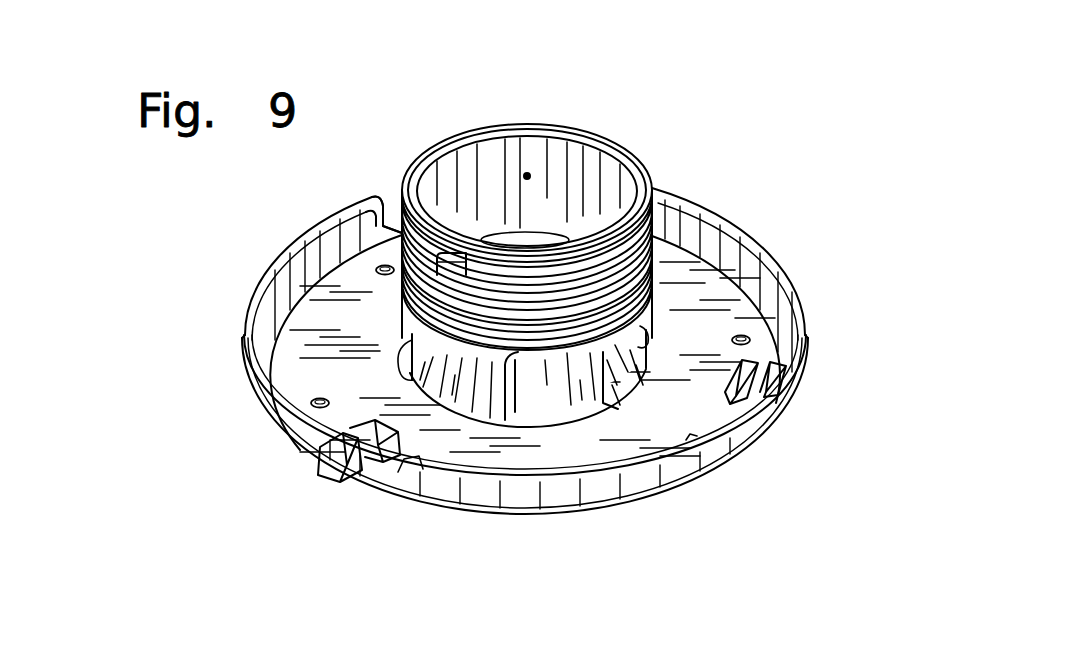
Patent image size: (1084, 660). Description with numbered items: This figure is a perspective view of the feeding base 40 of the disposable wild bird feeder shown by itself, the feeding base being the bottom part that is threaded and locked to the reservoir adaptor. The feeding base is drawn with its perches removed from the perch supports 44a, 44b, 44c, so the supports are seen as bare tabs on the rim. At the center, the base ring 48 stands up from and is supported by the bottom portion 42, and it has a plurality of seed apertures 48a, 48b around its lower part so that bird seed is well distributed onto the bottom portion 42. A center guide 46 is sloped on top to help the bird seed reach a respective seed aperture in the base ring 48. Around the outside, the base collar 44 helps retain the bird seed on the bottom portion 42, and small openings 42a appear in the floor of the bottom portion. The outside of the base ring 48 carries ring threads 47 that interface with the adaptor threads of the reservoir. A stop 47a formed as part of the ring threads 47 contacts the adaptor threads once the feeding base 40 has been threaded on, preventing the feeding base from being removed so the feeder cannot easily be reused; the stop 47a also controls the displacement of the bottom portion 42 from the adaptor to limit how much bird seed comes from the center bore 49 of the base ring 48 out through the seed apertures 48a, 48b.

The feeding base 40 is at (200, 304).
The bottom portion 42 is at (525, 345).
The holes 42a is at (744, 336).
The base collar 44 is at (310, 245).
The perch support 44a is at (325, 467).
The perch support 44b is at (780, 393).
The perch support 44c is at (386, 190).
The center guide 46 is at (453, 402).
The ring threads 47 is at (640, 212).
The stop 47a is at (456, 262).
The base ring 48 is at (626, 162).
The seed aperture 48a is at (485, 410).
The seed aperture 48b is at (618, 385).
The center bore 49 is at (528, 173).